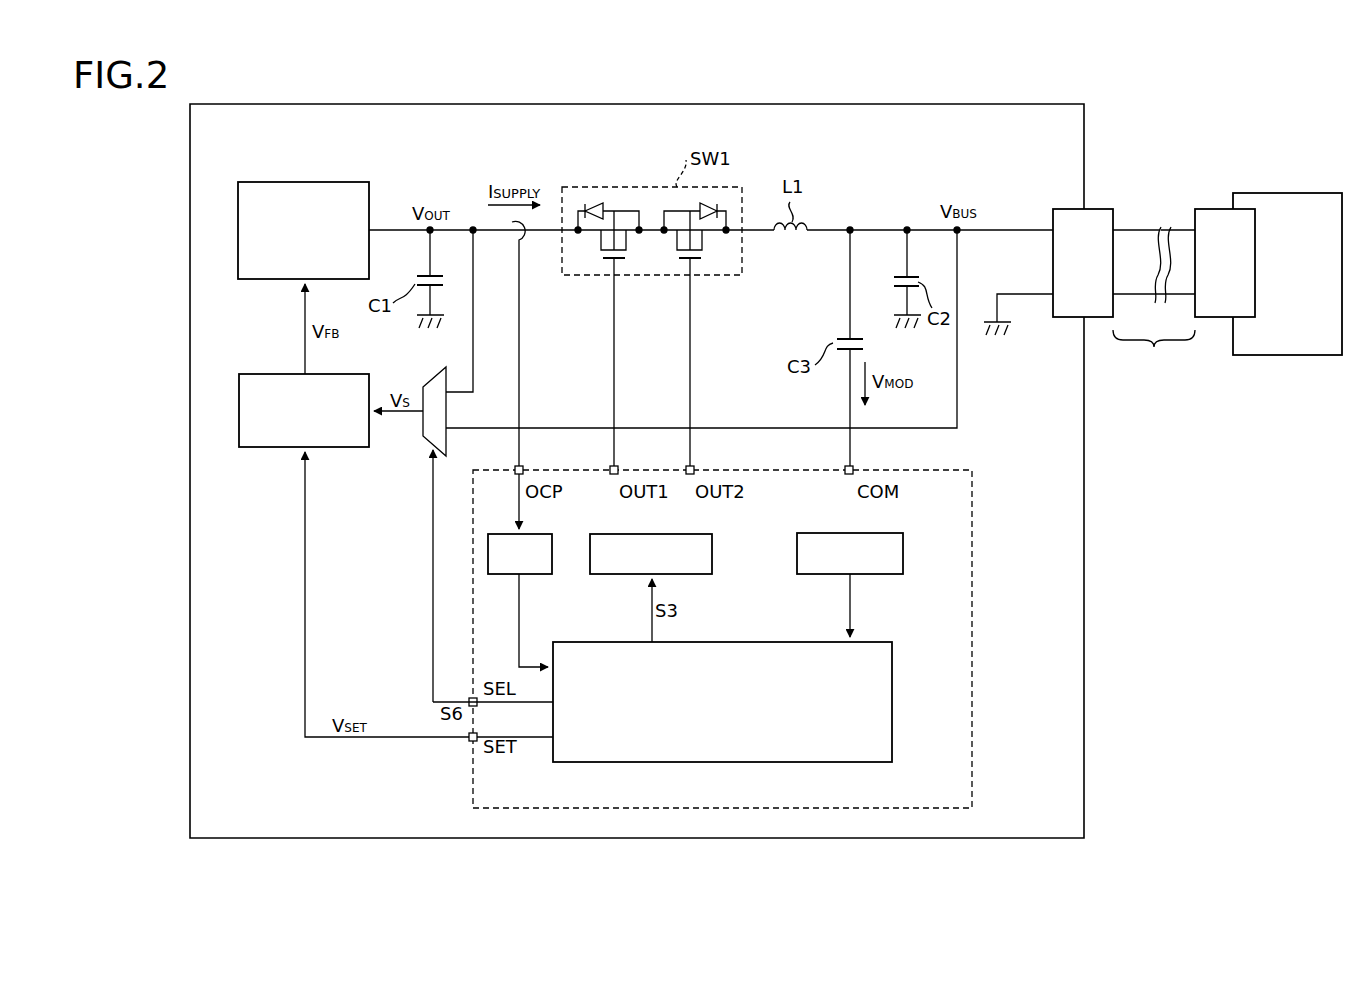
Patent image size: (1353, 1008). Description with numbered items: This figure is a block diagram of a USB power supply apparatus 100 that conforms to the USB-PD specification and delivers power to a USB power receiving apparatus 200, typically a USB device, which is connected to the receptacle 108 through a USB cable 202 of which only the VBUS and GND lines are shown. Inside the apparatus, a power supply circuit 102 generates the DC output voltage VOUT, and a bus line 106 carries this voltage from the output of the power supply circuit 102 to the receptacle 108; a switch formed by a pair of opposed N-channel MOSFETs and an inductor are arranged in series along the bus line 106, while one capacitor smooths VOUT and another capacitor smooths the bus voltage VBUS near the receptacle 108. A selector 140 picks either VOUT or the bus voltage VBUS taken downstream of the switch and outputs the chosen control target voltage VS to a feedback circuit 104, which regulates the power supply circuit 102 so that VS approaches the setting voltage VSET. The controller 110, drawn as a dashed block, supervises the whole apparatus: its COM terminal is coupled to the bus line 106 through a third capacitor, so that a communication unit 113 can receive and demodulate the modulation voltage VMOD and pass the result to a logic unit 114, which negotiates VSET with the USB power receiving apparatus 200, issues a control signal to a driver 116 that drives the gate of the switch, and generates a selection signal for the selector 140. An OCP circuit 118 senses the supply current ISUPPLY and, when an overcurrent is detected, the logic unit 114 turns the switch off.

The USB power supply apparatus 100 is at (663, 838).
The power supply circuit 102 is at (323, 182).
The feedback circuit 104 is at (277, 449).
The bus line 106 is at (880, 230).
The receptacle 108 is at (1104, 209).
The controller 110 is at (472, 774).
The communication unit 113 is at (905, 547).
The logic unit 114 is at (893, 656).
The driver 116 is at (715, 547).
The OCP circuit 118 is at (533, 574).
The selector 140 is at (423, 437).
The USB power receiving apparatus 200 is at (1290, 193).
The USB cable 202 is at (1154, 299).